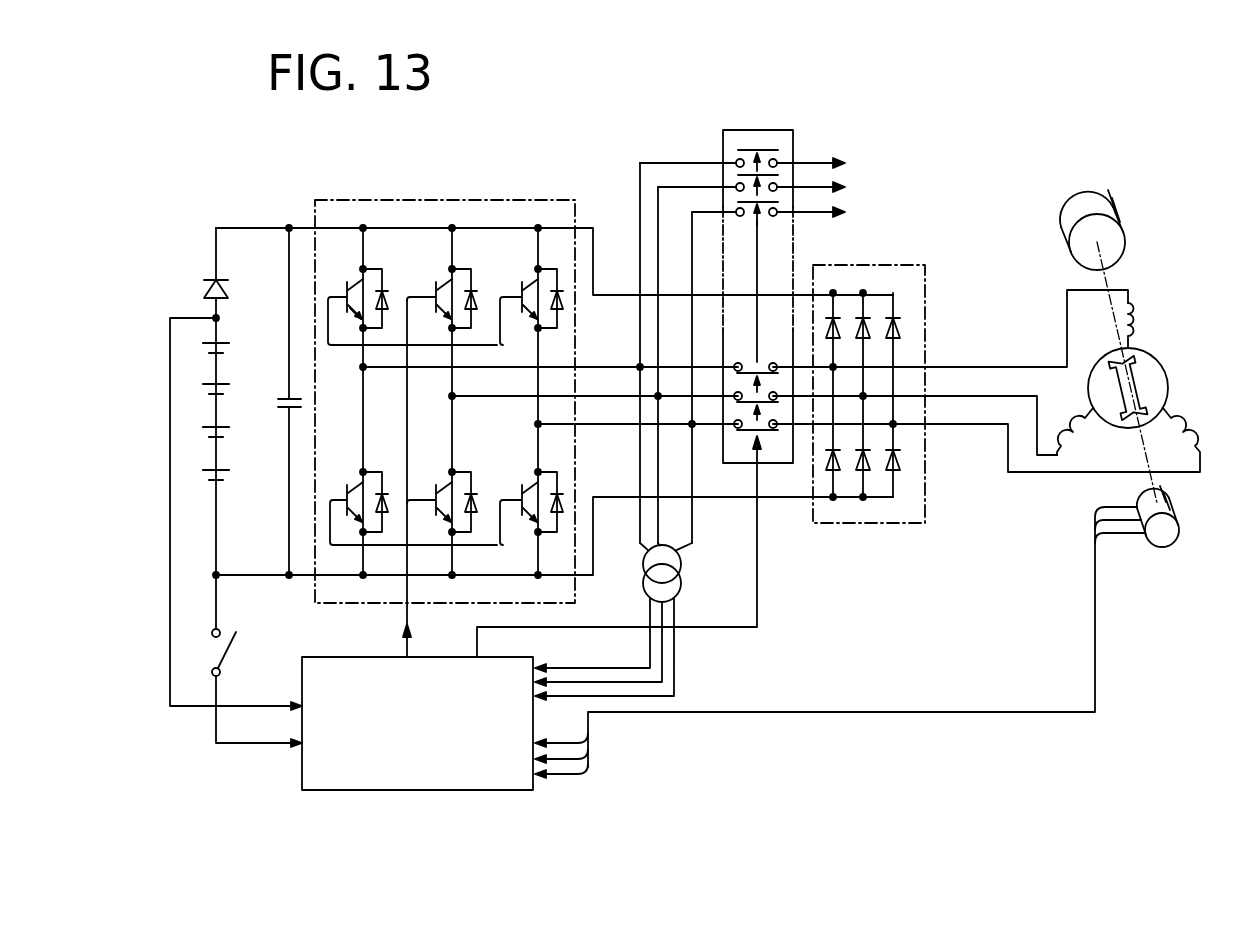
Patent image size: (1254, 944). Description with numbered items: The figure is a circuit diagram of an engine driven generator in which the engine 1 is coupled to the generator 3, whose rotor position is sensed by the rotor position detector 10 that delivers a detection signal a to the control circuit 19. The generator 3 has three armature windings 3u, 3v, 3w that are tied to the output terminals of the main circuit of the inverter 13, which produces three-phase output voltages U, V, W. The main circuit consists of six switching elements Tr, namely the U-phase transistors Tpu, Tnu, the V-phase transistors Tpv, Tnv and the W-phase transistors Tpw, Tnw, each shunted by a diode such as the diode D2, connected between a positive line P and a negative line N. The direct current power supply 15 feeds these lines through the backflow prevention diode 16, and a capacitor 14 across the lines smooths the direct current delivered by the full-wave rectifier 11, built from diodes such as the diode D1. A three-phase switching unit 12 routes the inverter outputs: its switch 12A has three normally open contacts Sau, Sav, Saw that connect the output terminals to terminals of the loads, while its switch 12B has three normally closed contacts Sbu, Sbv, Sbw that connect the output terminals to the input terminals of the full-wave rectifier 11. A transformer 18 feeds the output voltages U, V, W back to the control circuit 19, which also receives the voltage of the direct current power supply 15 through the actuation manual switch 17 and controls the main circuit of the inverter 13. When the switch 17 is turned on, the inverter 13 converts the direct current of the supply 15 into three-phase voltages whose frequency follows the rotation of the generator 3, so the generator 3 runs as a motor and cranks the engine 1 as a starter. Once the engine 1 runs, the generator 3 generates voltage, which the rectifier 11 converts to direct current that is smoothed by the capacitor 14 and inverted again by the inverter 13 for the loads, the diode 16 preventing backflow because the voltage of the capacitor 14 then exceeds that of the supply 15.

The engine 1 is at (1117, 211).
The generator 3 is at (1168, 381).
The U-phase armature winding 3u is at (1148, 325).
The V-phase armature winding 3v is at (1070, 431).
The W-phase armature winding 3w is at (1190, 430).
The rotor position detector 10 is at (1181, 507).
The full-wave rectifier 11 is at (885, 364).
The switching unit 12 is at (757, 130).
The switch 12A is at (742, 159).
The switch 12B is at (855, 435).
The inverter 13 is at (478, 200).
The capacitor 14 is at (286, 398).
The direct current power supply 15 is at (228, 436).
The backflow prevention diode 16 is at (203, 291).
The actuation manual switch 17 is at (234, 645).
The transformer 18 is at (683, 587).
The control circuit 19 is at (302, 770).
The rectifier diode D1 is at (900, 333).
The inverter diode D2 is at (476, 302).
The switching element Tr is at (347, 288).
The U-phase transistor Tpu is at (350, 322).
The V-phase transistor Tpv is at (436, 290).
The W-phase transistor Tpw is at (518, 320).
The U-phase transistor Tnu is at (347, 487).
The V-phase transistor Tnv is at (436, 487).
The W-phase transistor Tnw is at (522, 487).
The normally open contact Sau is at (738, 150).
The normally open contact Sav is at (738, 175).
The normally open contact Saw is at (738, 202).
The normally closed contact Sbu is at (775, 362).
The normally closed contact Sbv is at (737, 403).
The normally closed contact Sbw is at (750, 433).
The positive DC line P is at (315, 220).
The negative DC line N is at (333, 578).
The U-phase output voltage U is at (744, 330).
The V-phase output voltage V is at (753, 412).
The W-phase output voltage W is at (867, 435).
The detection signal a is at (840, 642).